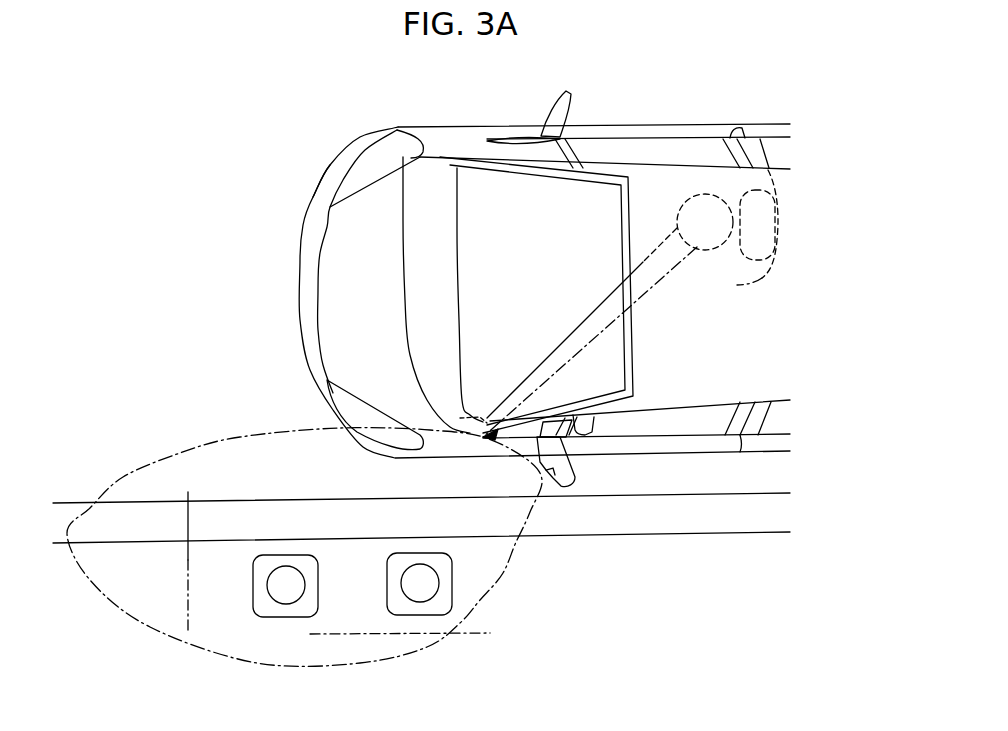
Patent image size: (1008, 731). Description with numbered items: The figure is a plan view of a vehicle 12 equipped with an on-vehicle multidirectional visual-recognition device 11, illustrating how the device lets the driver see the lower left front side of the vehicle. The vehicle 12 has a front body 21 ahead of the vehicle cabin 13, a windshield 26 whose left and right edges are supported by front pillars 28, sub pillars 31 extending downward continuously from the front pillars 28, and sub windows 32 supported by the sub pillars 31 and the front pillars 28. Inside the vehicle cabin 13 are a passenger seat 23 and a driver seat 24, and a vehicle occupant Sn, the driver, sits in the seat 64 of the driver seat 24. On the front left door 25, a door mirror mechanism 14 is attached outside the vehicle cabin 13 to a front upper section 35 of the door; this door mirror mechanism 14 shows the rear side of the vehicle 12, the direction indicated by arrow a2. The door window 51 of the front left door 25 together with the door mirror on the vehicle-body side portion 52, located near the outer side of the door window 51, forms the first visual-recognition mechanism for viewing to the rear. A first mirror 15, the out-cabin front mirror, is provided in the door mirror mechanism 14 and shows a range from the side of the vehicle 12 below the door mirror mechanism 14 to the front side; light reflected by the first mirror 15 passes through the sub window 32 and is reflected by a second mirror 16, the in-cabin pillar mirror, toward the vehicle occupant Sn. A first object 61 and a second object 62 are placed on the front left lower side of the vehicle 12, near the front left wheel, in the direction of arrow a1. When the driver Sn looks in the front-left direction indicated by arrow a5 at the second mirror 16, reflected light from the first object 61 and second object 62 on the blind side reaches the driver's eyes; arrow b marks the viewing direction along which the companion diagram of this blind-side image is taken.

The vehicle 12 is at (350, 97).
The front body 21 is at (315, 193).
The windshield 26 is at (538, 226).
The front pillars 28 is at (610, 167).
The vehicle occupant (driver) Sn is at (705, 194).
The driver seat 24 is at (800, 205).
The seat 64 is at (777, 243).
The vehicle cabin 13 is at (807, 277).
The passenger seat 23 is at (787, 338).
The second mirror (in-cabin pillar mirror) 16 is at (468, 420).
The sub window 32 is at (553, 421).
The sub pillars 31 is at (587, 423).
The on-vehicle multidirectional visual-recognition device 11 is at (523, 487).
The first mirror (out-cabin front mirror) 15 is at (537, 473).
The door mirror mechanism 14 is at (567, 490).
The vehicle-body side portion 52 is at (582, 467).
The front upper section 35 is at (577, 447).
The front left door 25 is at (652, 453).
The door window 51 is at (673, 427).
The second object 62 is at (283, 617).
The first object 61 is at (445, 598).
The arrow a1 is at (500, 479).
The arrow a2 is at (687, 470).
The arrow a5 is at (583, 341).
The arrow b is at (641, 280).